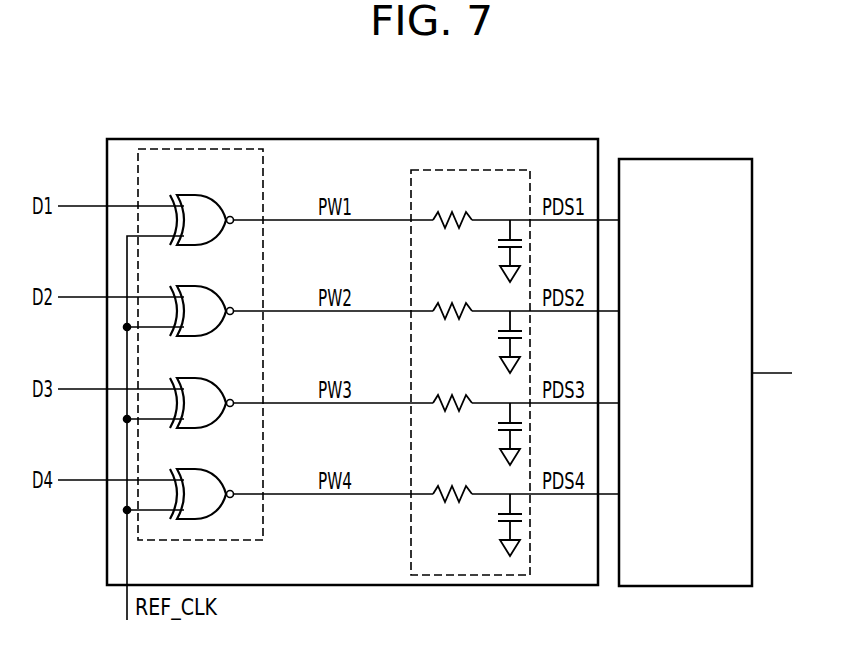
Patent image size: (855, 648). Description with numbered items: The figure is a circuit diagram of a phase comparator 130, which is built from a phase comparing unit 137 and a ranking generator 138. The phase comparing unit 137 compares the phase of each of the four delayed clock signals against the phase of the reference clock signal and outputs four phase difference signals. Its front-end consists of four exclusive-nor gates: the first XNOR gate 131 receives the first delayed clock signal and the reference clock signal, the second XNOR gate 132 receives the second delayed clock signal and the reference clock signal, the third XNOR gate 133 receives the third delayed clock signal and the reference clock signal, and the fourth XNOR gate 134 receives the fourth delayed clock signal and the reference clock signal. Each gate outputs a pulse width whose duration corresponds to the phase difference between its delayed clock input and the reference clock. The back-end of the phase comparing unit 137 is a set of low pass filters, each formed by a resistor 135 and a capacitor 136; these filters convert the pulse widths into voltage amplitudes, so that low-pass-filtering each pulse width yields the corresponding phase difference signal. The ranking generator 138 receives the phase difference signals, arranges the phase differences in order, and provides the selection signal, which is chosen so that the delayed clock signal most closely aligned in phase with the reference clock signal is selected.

The phase comparator 130 is at (434, 90).
The XNOR gate 1 131 is at (168, 216).
The XNOR gate 2 132 is at (168, 307).
The XNOR gate 3 133 is at (168, 398).
The XNOR gate 4 134 is at (168, 489).
The resistor 135 is at (455, 233).
The capacitor 136 is at (522, 243).
The phase comparing unit 137 is at (207, 139).
The ranking generator 138 is at (681, 158).